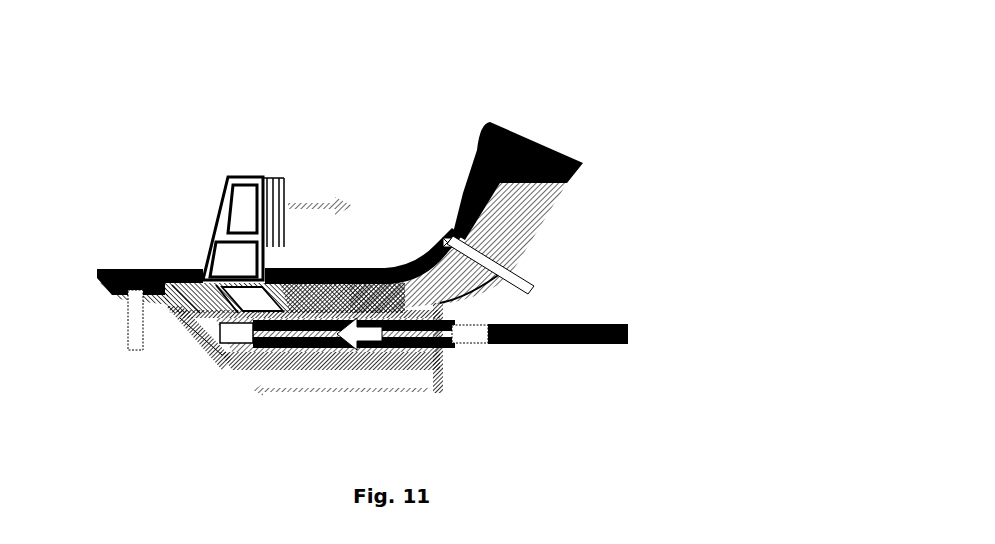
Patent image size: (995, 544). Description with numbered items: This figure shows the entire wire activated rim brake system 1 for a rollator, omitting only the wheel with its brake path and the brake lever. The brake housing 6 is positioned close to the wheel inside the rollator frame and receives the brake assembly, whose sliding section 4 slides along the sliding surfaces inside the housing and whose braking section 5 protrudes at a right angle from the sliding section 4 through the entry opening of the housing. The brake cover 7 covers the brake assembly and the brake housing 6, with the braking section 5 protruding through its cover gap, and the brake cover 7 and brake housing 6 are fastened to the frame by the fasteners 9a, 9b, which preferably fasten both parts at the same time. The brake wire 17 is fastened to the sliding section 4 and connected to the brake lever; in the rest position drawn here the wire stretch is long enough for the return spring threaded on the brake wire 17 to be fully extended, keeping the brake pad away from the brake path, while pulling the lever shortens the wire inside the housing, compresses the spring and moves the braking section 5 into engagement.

The wire activated rim brake system 1 is at (153, 168).
The sliding section 4 is at (344, 320).
The braking section 5 is at (242, 204).
The brake housing 6 is at (372, 356).
The brake cover 7 is at (520, 133).
The fastener 9a is at (528, 283).
The fastener 9b is at (127, 348).
The brake wire 17 is at (400, 328).